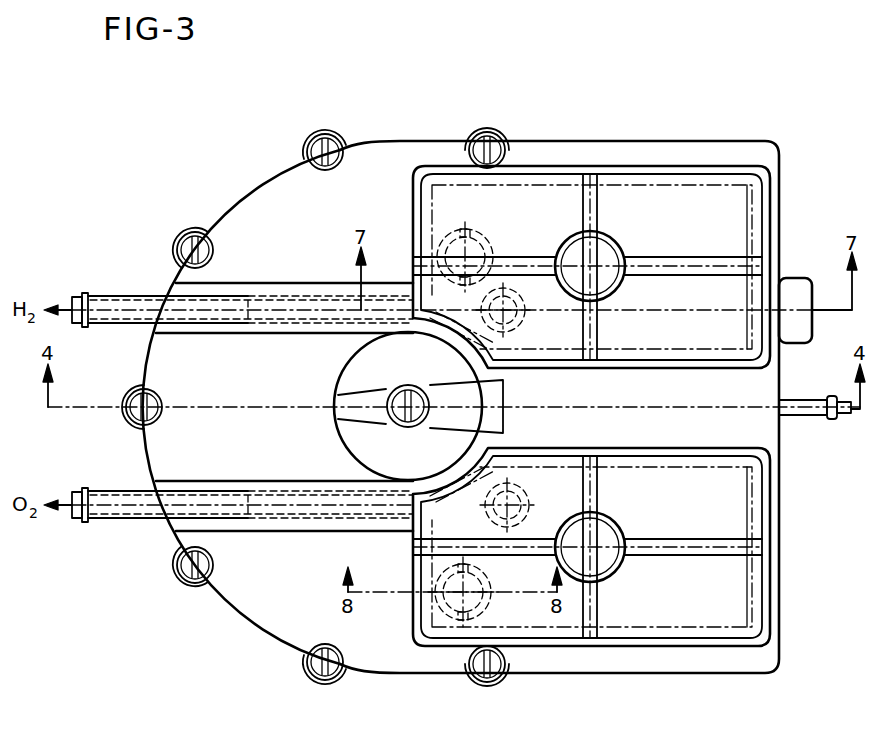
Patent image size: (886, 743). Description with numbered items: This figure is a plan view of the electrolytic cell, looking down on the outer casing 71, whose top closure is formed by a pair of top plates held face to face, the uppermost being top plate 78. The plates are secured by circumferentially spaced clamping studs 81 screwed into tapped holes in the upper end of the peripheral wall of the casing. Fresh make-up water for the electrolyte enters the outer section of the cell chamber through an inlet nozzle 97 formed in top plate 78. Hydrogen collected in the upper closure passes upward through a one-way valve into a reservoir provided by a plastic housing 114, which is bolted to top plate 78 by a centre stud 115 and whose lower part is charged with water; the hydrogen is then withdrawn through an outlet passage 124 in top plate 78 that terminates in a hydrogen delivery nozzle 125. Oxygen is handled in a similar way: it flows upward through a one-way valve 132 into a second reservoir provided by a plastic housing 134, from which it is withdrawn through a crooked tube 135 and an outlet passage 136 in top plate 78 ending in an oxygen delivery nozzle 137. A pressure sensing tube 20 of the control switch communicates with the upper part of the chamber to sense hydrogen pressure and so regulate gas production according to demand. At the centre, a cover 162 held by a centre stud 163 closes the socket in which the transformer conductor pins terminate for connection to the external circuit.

The pressure sensing tube 20 is at (787, 415).
The outer casing 71 is at (401, 133).
The top plate 78 is at (257, 200).
The clamping studs 81 is at (302, 143).
The inlet nozzle 97 is at (774, 282).
The plastic housing 114 is at (707, 198).
The centre stud 115 is at (575, 250).
The outlet passage 124 is at (216, 226).
The hydrogen delivery nozzle 125 is at (115, 305).
The one-way valve 132 is at (490, 603).
The plastic housing 134 is at (738, 580).
The crooked tube 135 is at (522, 482).
The outlet passage 136 is at (217, 588).
The oxygen delivery nozzle 137 is at (117, 507).
The cover 162 is at (358, 375).
The centre stud 163 is at (357, 417).